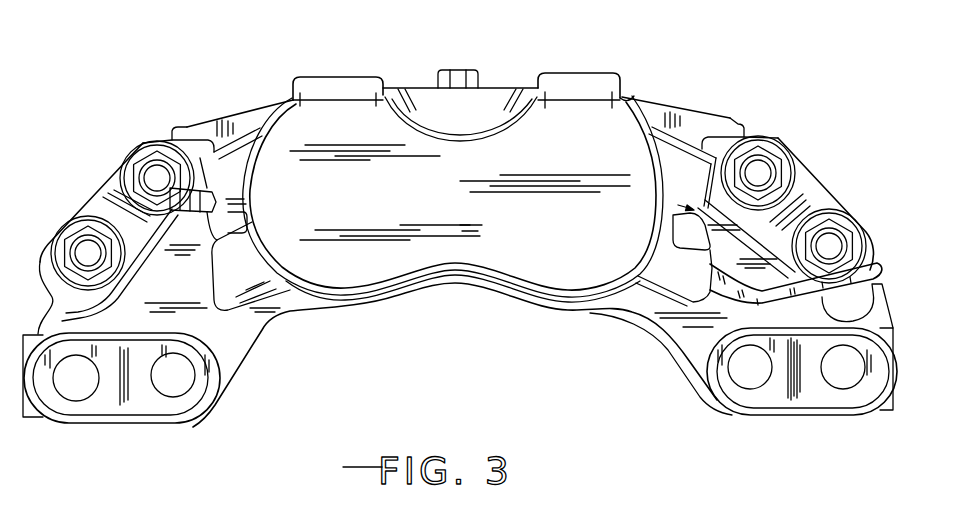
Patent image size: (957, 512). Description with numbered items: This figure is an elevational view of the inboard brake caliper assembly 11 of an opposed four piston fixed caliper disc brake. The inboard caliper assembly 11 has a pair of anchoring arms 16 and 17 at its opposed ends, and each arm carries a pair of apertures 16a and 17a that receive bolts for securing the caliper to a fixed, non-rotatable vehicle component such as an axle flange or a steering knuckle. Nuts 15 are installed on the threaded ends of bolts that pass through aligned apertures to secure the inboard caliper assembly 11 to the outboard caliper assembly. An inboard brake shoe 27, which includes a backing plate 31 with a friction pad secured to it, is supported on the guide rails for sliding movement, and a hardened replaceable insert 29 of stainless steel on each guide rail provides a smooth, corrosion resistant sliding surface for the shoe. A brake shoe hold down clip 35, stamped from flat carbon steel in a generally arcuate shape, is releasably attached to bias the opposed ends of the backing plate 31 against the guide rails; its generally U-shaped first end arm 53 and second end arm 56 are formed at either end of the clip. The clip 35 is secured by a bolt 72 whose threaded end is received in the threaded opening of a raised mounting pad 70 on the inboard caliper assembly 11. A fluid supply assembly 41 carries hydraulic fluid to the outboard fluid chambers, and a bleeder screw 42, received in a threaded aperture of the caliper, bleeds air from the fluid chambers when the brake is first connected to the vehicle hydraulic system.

The inboard brake caliper assembly 11 is at (443, 286).
The nuts 15 is at (59, 228).
The anchoring arm 16 is at (143, 413).
The apertures 16a is at (80, 389).
The anchoring arm 17 is at (790, 408).
The apertures 17a is at (744, 383).
The inboard brake shoe 27 is at (676, 104).
The hardened replaceable insert 29 is at (172, 142).
The backing plate 31 is at (200, 127).
The brake shoe hold down clip 35 is at (497, 87).
The fluid supply assembly 41 is at (876, 260).
The bleeder screw 42 is at (250, 207).
The first end arm 53 is at (292, 100).
The second end arm 56 is at (622, 97).
The raised mounting pad 70 is at (482, 110).
The bolt 72 is at (456, 70).